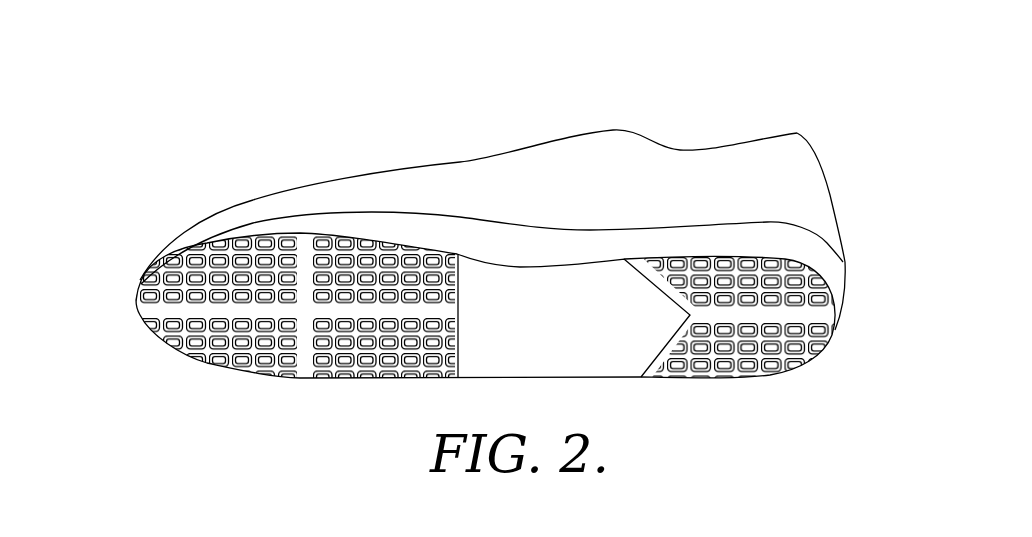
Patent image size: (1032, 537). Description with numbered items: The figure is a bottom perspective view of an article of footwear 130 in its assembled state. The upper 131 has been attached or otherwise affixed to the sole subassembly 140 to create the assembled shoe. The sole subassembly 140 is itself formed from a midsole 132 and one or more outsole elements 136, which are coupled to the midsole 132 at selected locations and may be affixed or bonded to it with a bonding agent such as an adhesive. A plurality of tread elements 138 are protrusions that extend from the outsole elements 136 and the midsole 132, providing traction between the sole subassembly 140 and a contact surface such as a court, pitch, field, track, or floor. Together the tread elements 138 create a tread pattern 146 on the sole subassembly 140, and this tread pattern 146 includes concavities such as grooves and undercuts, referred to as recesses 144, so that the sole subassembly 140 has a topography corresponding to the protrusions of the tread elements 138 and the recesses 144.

The article of footwear 130 is at (741, 111).
The upper 131 is at (818, 178).
The midsole 132 is at (136, 275).
The outsole elements 136 is at (350, 232).
The tread elements 138 is at (173, 297).
The sole subassembly 140 is at (843, 262).
The recesses 144 is at (808, 312).
The tread pattern 146 is at (220, 367).